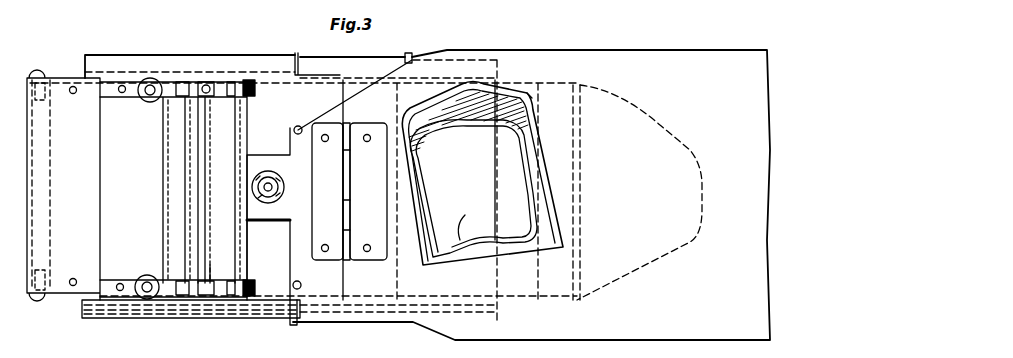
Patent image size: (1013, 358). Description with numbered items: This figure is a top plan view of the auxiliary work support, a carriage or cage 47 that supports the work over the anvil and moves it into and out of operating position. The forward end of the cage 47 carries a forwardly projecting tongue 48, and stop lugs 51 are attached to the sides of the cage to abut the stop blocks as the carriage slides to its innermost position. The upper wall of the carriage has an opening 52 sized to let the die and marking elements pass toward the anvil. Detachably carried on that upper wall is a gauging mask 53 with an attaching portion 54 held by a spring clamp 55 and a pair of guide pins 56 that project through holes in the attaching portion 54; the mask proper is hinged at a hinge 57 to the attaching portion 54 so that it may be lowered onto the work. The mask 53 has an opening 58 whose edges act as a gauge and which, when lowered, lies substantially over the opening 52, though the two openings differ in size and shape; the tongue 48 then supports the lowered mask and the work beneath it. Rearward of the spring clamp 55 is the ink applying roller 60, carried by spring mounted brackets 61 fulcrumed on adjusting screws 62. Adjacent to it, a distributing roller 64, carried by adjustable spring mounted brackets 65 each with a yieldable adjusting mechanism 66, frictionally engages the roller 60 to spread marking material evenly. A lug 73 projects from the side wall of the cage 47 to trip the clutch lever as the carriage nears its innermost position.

The cage 47 is at (62, 275).
The tongue 48 is at (644, 140).
The stop lugs 51 is at (295, 60).
The opening 52 is at (482, 172).
The gauging mask 53 is at (617, 68).
The attaching portion 54 is at (327, 105).
The spring clamp 55 is at (270, 204).
The guide pins 56 is at (296, 127).
The hinge 57 is at (352, 202).
The opening 58 is at (512, 95).
The ink applying roller 60 is at (210, 265).
The spring mounted brackets 61 is at (166, 84).
The adjusting screws 62 is at (207, 84).
The distributing roller 64 is at (175, 227).
The adjustable spring mounted brackets 65 is at (181, 82).
The yieldable adjusting mechanism 66 is at (246, 298).
The lug 73 is at (410, 57).